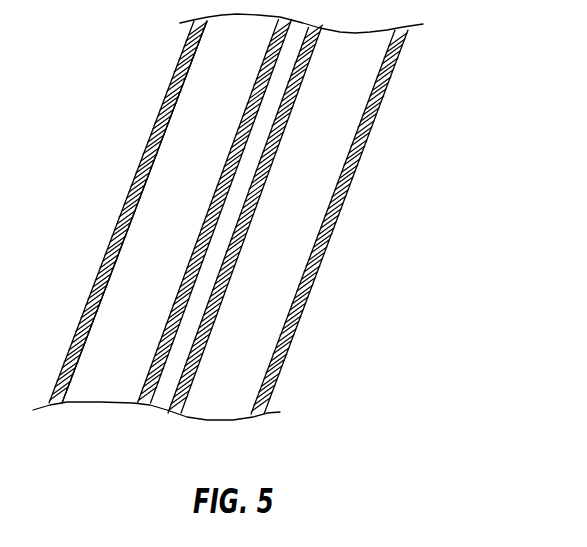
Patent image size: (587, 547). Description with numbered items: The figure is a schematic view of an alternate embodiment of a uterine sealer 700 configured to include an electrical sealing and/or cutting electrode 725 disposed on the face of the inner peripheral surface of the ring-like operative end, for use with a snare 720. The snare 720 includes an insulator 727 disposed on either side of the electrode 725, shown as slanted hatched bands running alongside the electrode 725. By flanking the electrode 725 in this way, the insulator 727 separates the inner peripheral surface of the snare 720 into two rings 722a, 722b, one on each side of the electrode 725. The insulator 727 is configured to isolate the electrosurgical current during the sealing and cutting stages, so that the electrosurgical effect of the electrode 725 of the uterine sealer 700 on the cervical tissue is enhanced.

The uterine sealer 700 is at (502, 48).
The snare 720 is at (120, 199).
The ring 722a is at (183, 130).
The ring 722b is at (400, 145).
The electrical sealing and/or cutting electrode 725 is at (276, 104).
The insulator 727 is at (350, 270).